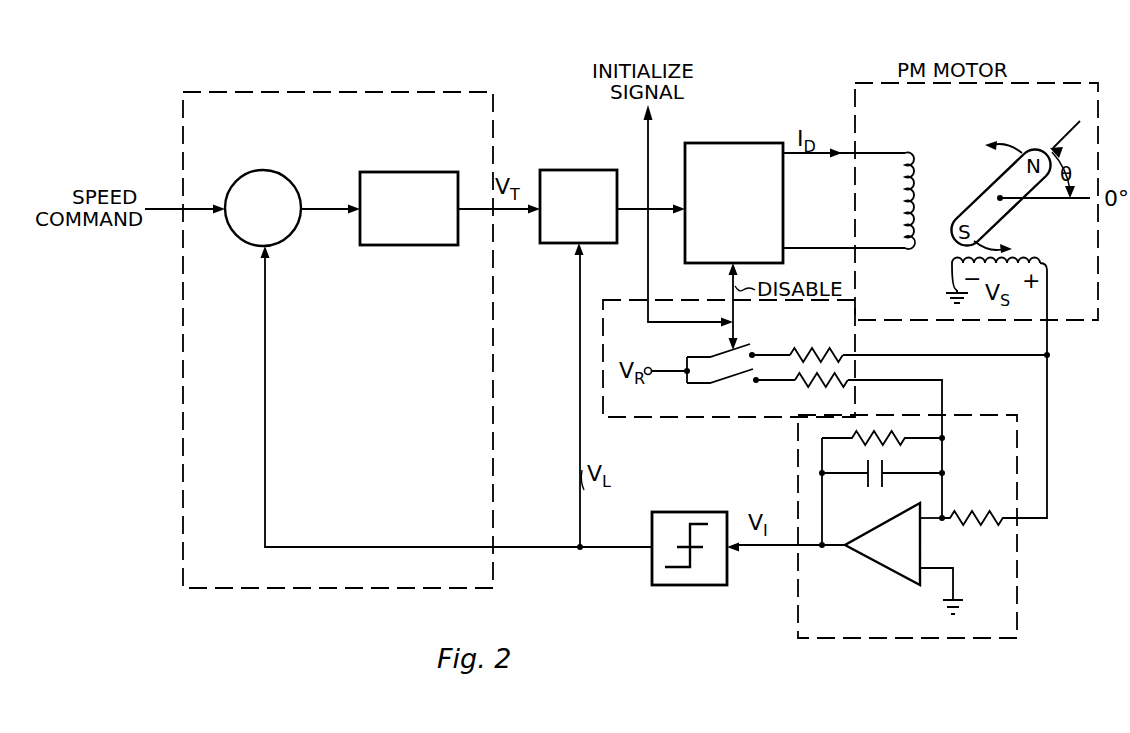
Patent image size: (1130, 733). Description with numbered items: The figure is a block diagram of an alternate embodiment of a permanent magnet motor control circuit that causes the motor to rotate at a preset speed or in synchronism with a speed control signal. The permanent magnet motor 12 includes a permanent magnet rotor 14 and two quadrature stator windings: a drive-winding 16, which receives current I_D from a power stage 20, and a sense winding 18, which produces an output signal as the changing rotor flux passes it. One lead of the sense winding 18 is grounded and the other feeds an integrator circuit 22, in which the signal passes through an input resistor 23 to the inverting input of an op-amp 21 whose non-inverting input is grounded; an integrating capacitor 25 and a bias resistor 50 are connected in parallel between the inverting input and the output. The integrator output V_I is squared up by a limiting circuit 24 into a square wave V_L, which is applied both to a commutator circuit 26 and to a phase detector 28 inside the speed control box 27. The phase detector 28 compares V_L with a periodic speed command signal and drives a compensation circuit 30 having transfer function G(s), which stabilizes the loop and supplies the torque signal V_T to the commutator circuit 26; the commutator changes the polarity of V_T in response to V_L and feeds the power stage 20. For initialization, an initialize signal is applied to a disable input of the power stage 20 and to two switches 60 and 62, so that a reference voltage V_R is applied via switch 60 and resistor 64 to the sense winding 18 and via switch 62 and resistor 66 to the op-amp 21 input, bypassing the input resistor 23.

The permanent magnet motor 12 is at (1043, 83).
The permanent magnet rotor 14 is at (987, 190).
The drive-winding 16 is at (882, 153).
The sense winding 18 is at (1052, 282).
The power stage 20 is at (743, 143).
The op-amp 21 is at (880, 565).
The integrator circuit 22 is at (1020, 597).
The input resistor 23 is at (982, 510).
The limiting circuit 24 is at (695, 587).
The integrating capacitor 25 is at (875, 488).
The commutator circuit 26 is at (580, 170).
The box 27 is at (295, 589).
The phase detector 28 is at (285, 172).
The compensation circuit 30 is at (410, 172).
The bias resistor 50 is at (903, 449).
The switch 60 is at (712, 354).
The switch 62 is at (728, 386).
The resistor 64 is at (820, 346).
The resistor 66 is at (817, 388).